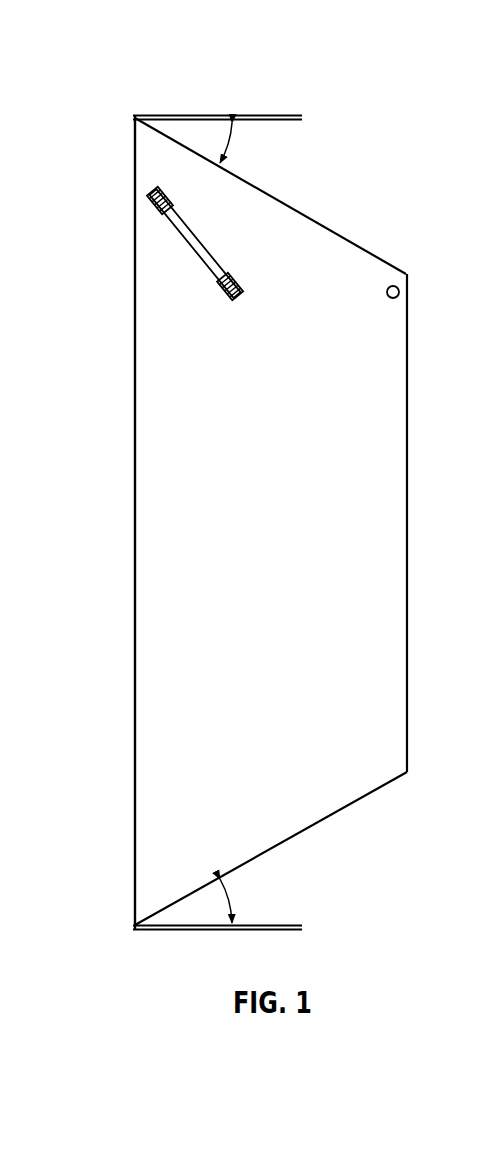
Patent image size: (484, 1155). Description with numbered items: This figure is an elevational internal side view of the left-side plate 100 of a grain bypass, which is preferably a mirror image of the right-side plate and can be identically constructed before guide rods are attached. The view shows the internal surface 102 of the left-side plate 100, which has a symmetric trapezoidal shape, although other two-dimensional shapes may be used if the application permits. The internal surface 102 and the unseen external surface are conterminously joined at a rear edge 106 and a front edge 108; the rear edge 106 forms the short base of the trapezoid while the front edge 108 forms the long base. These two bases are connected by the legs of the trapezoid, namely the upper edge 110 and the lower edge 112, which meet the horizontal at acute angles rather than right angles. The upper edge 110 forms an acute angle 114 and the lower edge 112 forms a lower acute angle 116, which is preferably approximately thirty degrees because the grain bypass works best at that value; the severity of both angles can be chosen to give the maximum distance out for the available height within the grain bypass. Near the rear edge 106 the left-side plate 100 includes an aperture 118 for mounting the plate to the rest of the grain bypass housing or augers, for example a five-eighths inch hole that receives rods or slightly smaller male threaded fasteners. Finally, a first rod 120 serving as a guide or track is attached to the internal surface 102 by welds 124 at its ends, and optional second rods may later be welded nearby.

The left-side plate 100 is at (170, 111).
The internal surface 102 is at (294, 536).
The rear edge 106 is at (408, 522).
The front edge 108 is at (134, 548).
The upper edge 110 is at (313, 216).
The lower edge 112 is at (314, 823).
The acute angle 114 is at (231, 141).
The lower acute angle 116 is at (231, 902).
The aperture 118 is at (408, 283).
The first rod 120 is at (180, 243).
The welds 124 is at (150, 195).